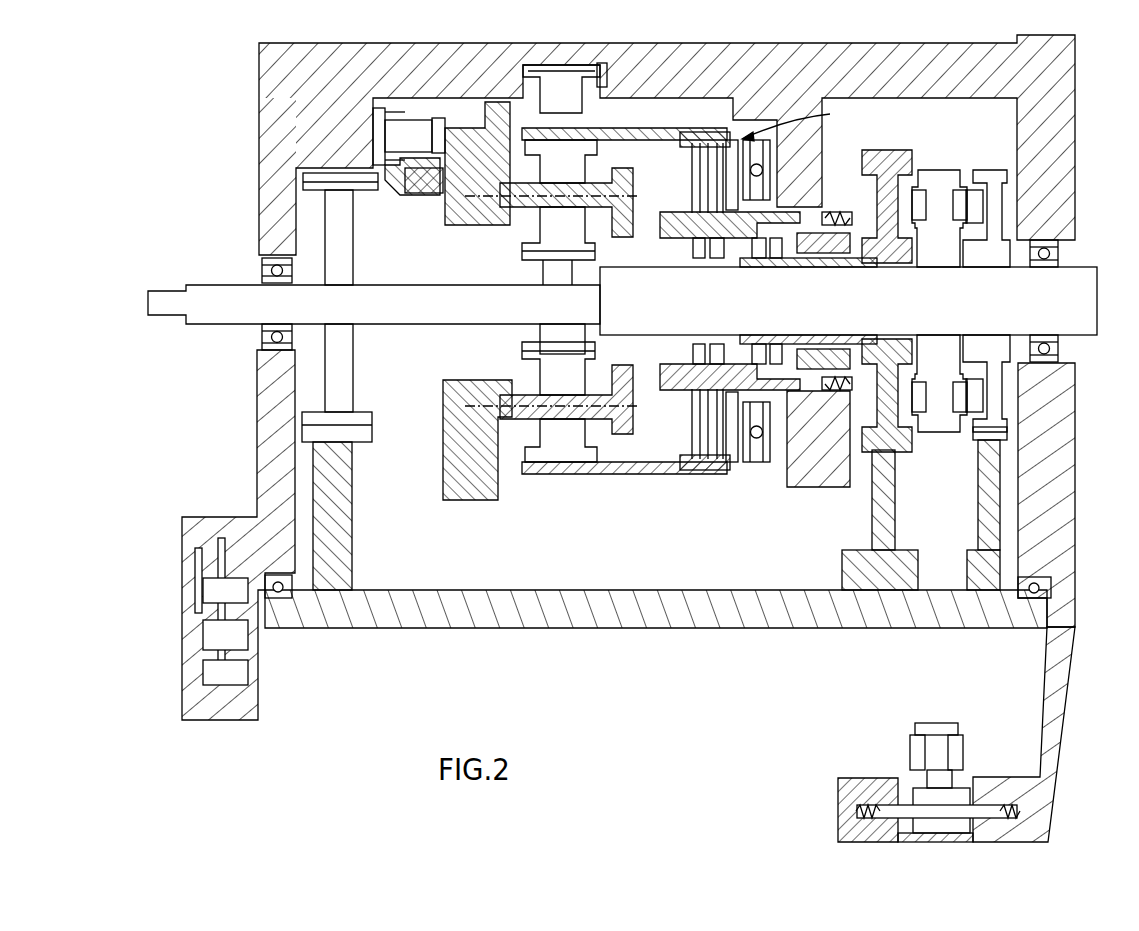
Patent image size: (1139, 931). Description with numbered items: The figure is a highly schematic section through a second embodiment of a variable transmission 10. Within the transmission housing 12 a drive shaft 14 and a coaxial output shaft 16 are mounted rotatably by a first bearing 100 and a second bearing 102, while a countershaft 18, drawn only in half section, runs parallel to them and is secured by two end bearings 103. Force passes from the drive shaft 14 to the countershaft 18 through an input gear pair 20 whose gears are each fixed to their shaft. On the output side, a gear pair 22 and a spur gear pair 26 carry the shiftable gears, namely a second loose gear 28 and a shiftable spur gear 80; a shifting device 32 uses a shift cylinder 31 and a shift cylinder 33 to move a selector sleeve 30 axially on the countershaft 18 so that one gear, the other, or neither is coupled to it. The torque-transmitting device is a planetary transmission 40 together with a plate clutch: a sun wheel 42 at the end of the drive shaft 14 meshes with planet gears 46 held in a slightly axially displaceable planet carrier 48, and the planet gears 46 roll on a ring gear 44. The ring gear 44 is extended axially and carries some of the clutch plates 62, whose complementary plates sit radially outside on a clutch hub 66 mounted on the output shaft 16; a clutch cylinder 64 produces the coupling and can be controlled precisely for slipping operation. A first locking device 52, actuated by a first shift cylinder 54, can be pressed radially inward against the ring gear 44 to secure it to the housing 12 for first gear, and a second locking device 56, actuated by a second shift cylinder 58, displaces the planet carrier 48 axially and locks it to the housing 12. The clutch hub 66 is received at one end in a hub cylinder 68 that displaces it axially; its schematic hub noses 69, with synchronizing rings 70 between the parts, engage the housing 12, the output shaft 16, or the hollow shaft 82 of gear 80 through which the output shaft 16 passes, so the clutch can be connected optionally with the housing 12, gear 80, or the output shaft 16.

The variable transmission 10 is at (242, 90).
The transmission housing 12 is at (285, 66).
The drive shaft 14 is at (211, 292).
The output shaft 16 is at (1075, 272).
The countershaft 18 is at (608, 630).
The input gear pair 20 is at (352, 380).
The gear pair 22 is at (908, 440).
The spur gear pair 26 is at (990, 472).
The second loose gear 28 is at (995, 210).
The selector sleeve 30 is at (938, 185).
The shift cylinder 31 is at (855, 800).
The shifting device 32 is at (922, 782).
The shift cylinder 33 is at (1013, 804).
The planetary transmission 40 is at (526, 227).
The sun wheel 42 is at (548, 336).
The ring gear 44 is at (697, 140).
The planet gear 46 is at (548, 160).
The planet carrier 48 is at (520, 200).
The first locking device 52 is at (572, 80).
The first shift cylinder 54 is at (615, 60).
The second locking device 56 is at (420, 128).
The second shift cylinder 58 is at (392, 117).
The clutch plates 62 is at (731, 140).
The clutch cylinder 64 is at (765, 155).
The clutch hub 66 is at (670, 213).
The hub cylinder 68 is at (840, 212).
The hub nose 69 is at (700, 258).
The synchronizing ring 70 is at (720, 258).
The shiftable spur gear 80 is at (888, 170).
The hollow shaft 82 is at (838, 268).
The first bearing 100 is at (262, 338).
The second bearing 102 is at (1046, 350).
The third bearing 103 is at (1044, 588).